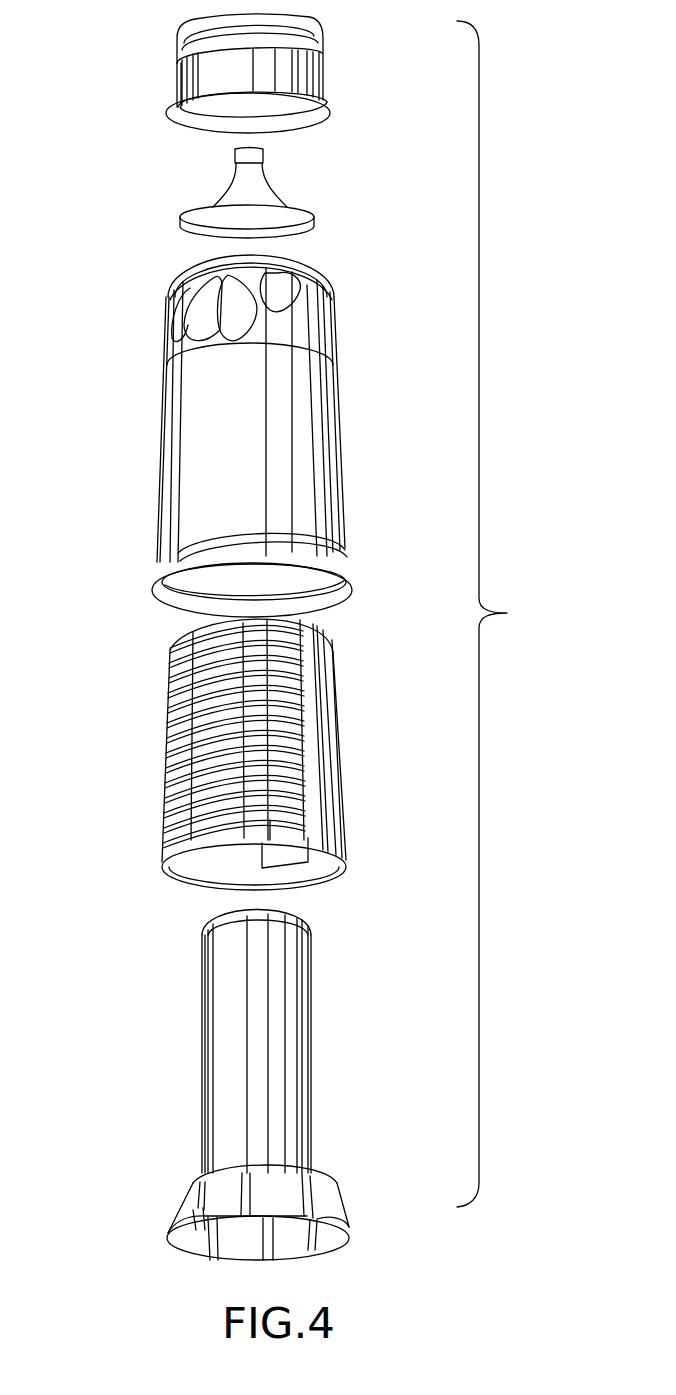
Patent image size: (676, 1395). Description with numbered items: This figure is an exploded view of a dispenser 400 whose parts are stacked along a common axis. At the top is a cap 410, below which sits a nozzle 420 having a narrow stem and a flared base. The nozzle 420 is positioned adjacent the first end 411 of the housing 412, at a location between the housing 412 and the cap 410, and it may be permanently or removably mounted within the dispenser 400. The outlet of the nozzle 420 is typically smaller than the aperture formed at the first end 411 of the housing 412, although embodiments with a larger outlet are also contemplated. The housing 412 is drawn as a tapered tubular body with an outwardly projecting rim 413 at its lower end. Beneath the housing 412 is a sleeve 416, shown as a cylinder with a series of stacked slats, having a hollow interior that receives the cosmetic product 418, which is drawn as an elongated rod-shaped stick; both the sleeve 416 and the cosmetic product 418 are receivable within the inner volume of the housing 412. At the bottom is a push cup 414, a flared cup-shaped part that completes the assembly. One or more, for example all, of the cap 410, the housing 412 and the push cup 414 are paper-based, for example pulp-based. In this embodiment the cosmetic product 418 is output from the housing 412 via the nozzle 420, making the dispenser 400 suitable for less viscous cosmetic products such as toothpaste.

The dispenser 400 is at (511, 614).
The cap 410 is at (188, 82).
The nozzle 420 is at (243, 193).
The first end 411 is at (303, 262).
The housing 412 is at (193, 447).
The flange 413 is at (352, 587).
The sleeve 416 is at (176, 697).
The cosmetic product 418 is at (240, 988).
The push cup 414 is at (187, 1197).